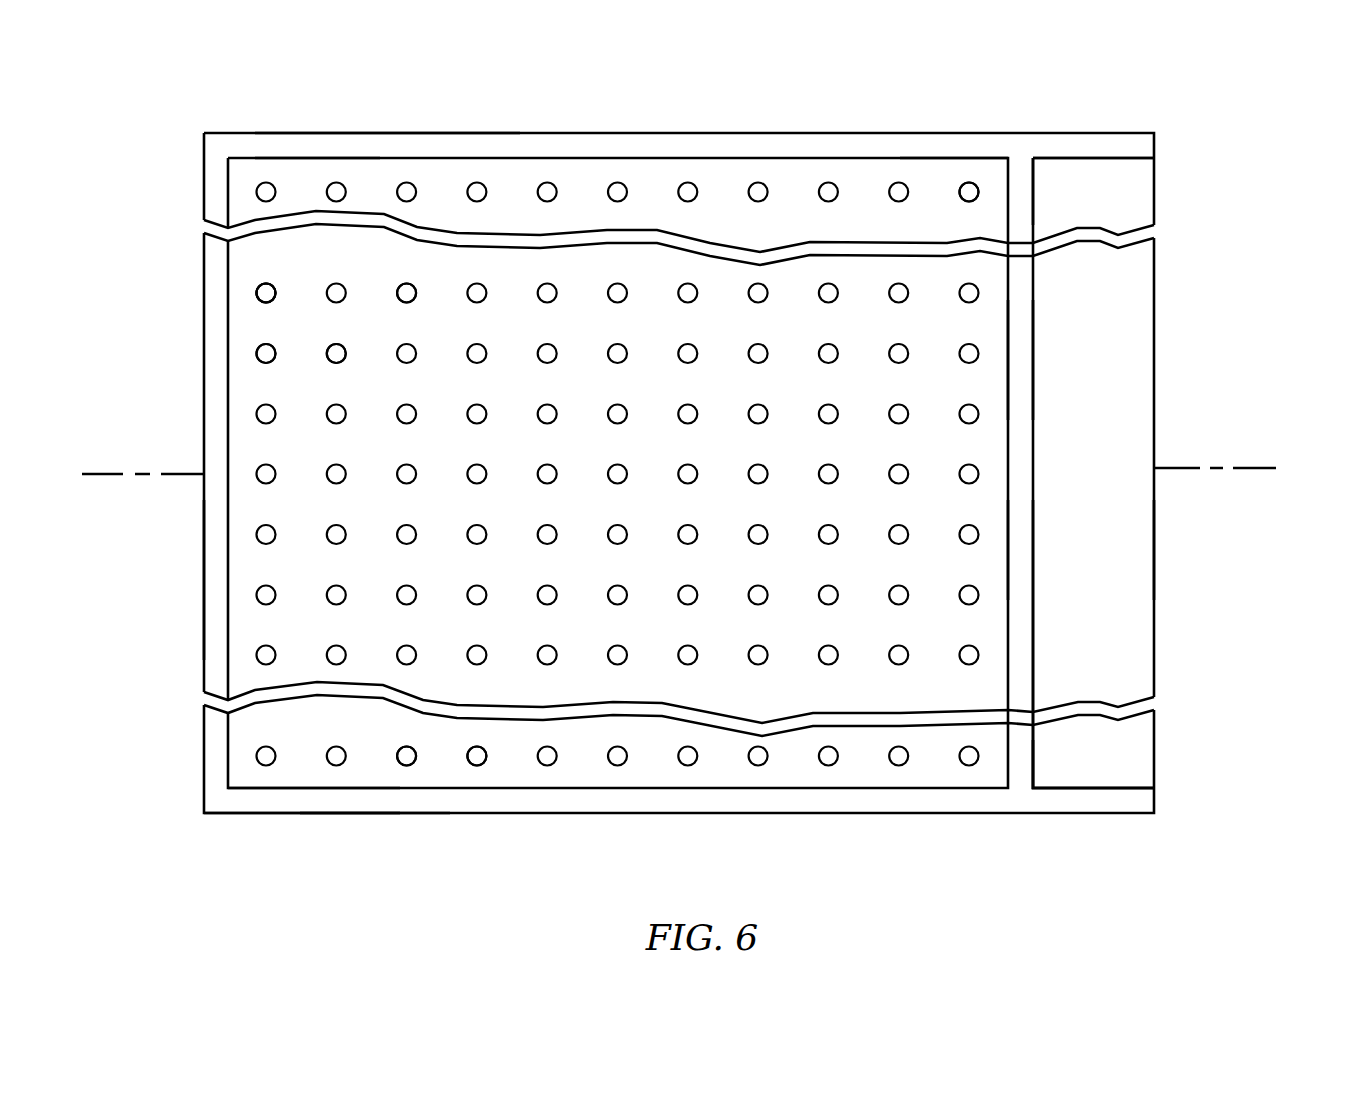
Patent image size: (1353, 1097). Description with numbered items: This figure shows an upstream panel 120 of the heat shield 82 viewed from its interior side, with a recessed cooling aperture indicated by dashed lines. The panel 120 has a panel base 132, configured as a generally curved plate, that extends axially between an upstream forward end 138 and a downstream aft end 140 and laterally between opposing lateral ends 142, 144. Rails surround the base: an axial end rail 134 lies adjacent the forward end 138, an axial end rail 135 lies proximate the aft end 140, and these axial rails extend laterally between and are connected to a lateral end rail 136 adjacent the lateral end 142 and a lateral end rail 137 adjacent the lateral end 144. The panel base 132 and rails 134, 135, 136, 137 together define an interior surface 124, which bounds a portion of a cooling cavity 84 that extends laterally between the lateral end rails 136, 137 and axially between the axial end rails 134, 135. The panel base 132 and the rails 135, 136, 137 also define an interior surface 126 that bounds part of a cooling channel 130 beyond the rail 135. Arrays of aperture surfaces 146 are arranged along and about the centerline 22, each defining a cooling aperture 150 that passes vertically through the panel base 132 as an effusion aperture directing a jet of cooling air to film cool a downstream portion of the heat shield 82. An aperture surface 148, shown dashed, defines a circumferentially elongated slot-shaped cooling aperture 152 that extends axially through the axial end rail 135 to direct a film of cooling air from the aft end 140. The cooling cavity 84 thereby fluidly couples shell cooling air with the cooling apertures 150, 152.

The centerline 22 is at (1247, 468).
The heat shield 82 is at (1208, 137).
The panel 120 is at (618, 473).
The interior surface 124 is at (936, 194).
The interior surface 126 is at (1130, 192).
The cooling channel 130 is at (1086, 757).
The panel base 132 is at (1130, 629).
The axial end rail 134 is at (213, 557).
The axial end rail 135 is at (1020, 554).
The lateral end rail 136 is at (318, 148).
The lateral end rail 137 is at (293, 803).
The forward end 138 is at (205, 618).
The aft end 140 is at (1155, 552).
The lateral end 142 is at (404, 134).
The lateral end 144 is at (350, 815).
The aperture surface 146 is at (262, 358).
The aperture surface 148 is at (1022, 381).
The cooling aperture 150 is at (336, 354).
The cooling aperture 152 is at (1020, 331).
The cooling cavity 84 is at (441, 752).